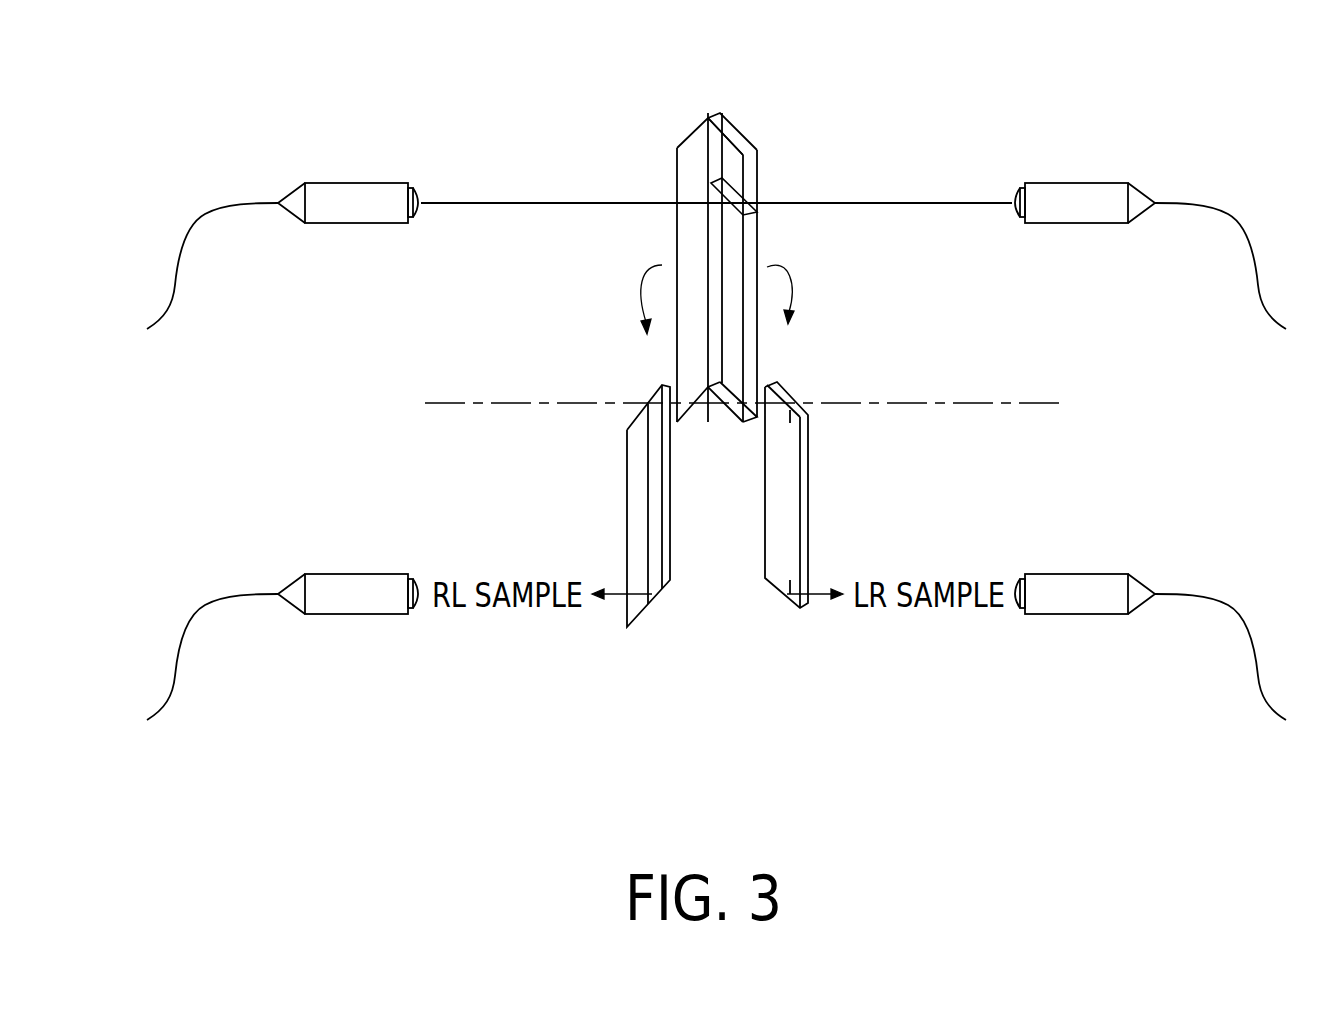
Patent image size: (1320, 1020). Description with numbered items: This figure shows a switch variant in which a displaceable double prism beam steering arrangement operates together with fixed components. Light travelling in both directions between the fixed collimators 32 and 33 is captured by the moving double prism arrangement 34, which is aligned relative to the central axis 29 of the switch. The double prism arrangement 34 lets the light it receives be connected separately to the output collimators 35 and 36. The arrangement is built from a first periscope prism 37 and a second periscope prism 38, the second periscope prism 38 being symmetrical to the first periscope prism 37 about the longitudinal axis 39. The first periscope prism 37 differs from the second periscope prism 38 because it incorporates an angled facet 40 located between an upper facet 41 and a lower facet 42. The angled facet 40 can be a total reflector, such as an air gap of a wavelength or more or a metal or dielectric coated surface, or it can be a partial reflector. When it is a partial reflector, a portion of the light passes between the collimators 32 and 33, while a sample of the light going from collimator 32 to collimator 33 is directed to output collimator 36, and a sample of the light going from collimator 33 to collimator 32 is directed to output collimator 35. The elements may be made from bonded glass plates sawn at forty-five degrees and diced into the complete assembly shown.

The central axis 29 is at (1017, 405).
The fixed collimator 32 is at (378, 183).
The fixed collimator 33 is at (1067, 181).
The double prism arrangement 34 is at (721, 272).
The output collimator 35 is at (348, 617).
The output collimator 36 is at (1093, 617).
The first periscope prism 37 is at (757, 238).
The second periscope prism 38 is at (675, 178).
The longitudinal axis 39 is at (708, 422).
The angled facet 40 is at (758, 213).
The upper facet 41 is at (740, 130).
The lower facet 42 is at (734, 418).